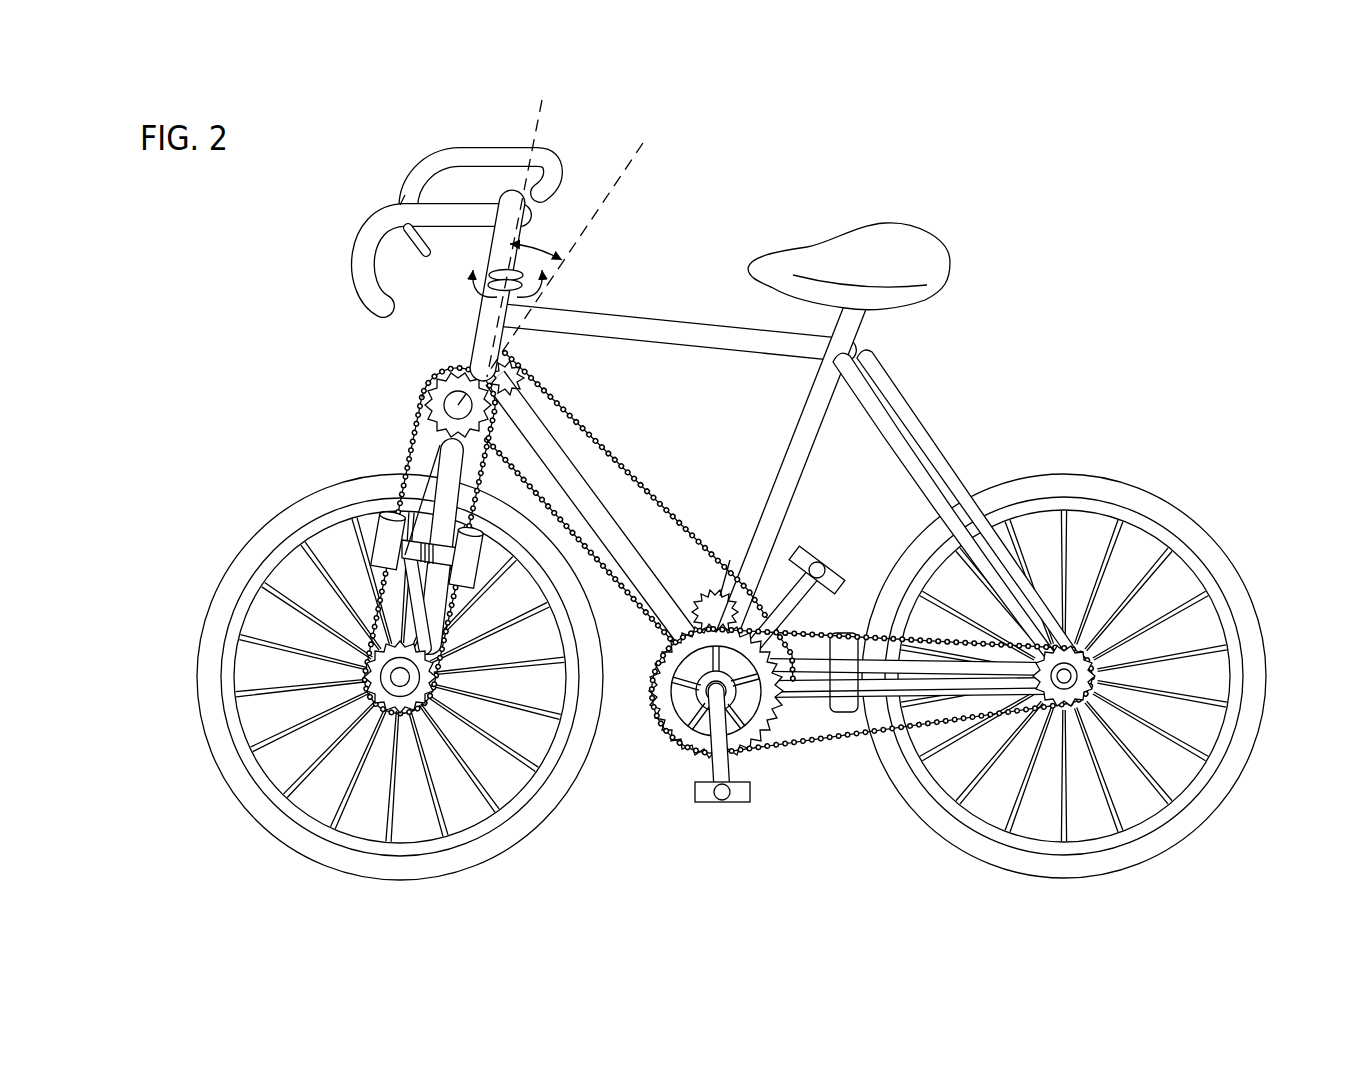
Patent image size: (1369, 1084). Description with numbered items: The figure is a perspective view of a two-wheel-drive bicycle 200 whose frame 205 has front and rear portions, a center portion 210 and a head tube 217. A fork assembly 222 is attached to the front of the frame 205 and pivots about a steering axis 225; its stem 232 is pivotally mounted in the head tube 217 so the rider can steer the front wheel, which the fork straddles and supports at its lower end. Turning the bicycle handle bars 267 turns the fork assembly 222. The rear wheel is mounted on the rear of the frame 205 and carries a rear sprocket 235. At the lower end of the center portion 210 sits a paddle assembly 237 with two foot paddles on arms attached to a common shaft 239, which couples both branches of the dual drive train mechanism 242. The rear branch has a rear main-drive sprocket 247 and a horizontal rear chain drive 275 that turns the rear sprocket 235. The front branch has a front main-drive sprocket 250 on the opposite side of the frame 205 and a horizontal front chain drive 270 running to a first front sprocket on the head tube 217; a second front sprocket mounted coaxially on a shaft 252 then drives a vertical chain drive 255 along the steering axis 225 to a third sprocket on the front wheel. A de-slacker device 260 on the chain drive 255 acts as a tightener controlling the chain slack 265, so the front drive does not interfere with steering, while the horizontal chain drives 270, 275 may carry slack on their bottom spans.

The two-wheel-drive bicycle 200 is at (1098, 222).
The frame 205 is at (660, 327).
The center portion 210 is at (715, 525).
The head tube 217 is at (533, 207).
The fork assembly 222 is at (433, 497).
The steering axis 225 is at (537, 133).
The stem 232 is at (485, 325).
The rear sprocket 235 is at (1069, 667).
The paddle assembly 237 is at (757, 765).
The common shaft 239 is at (717, 692).
The dual drive train mechanism 242 is at (698, 592).
The rear main-drive sprocket 247 is at (683, 740).
The front main-drive sprocket 250 is at (724, 590).
The shaft 252 is at (450, 406).
The chain drive 255 is at (450, 638).
The de-slacker device 260 is at (390, 543).
The chain slack 265 is at (395, 455).
The bicycle handle bars 267 is at (443, 160).
The horizontal front chain drive 270 is at (585, 428).
The horizontal rear chain drive 275 is at (830, 705).